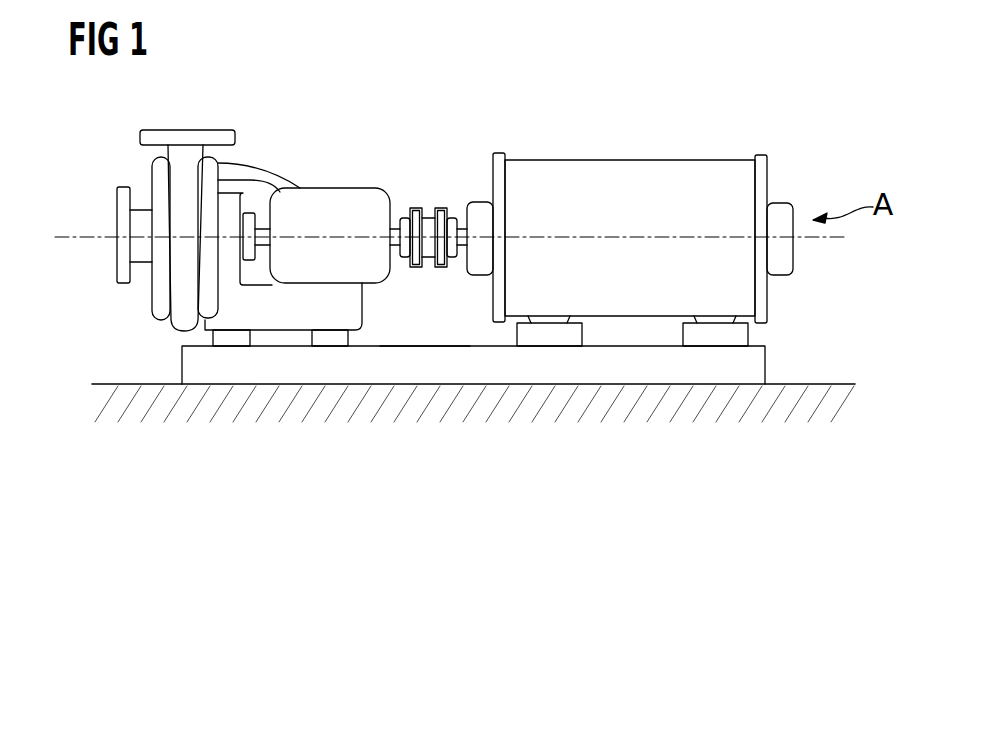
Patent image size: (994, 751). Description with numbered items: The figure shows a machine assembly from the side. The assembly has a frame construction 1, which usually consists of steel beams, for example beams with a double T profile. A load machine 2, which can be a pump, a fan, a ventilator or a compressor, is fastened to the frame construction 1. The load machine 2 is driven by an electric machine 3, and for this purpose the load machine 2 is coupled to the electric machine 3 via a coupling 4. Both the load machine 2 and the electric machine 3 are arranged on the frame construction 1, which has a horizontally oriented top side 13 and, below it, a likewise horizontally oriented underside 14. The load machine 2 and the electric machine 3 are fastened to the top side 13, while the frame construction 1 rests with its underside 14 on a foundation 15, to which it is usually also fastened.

The frame construction 1 is at (765, 356).
The load machine 2 is at (338, 192).
The electric machine 3 is at (613, 170).
The coupling 4 is at (428, 210).
The top side 13 is at (418, 345).
The underside 14 is at (388, 388).
The foundation 15 is at (540, 405).